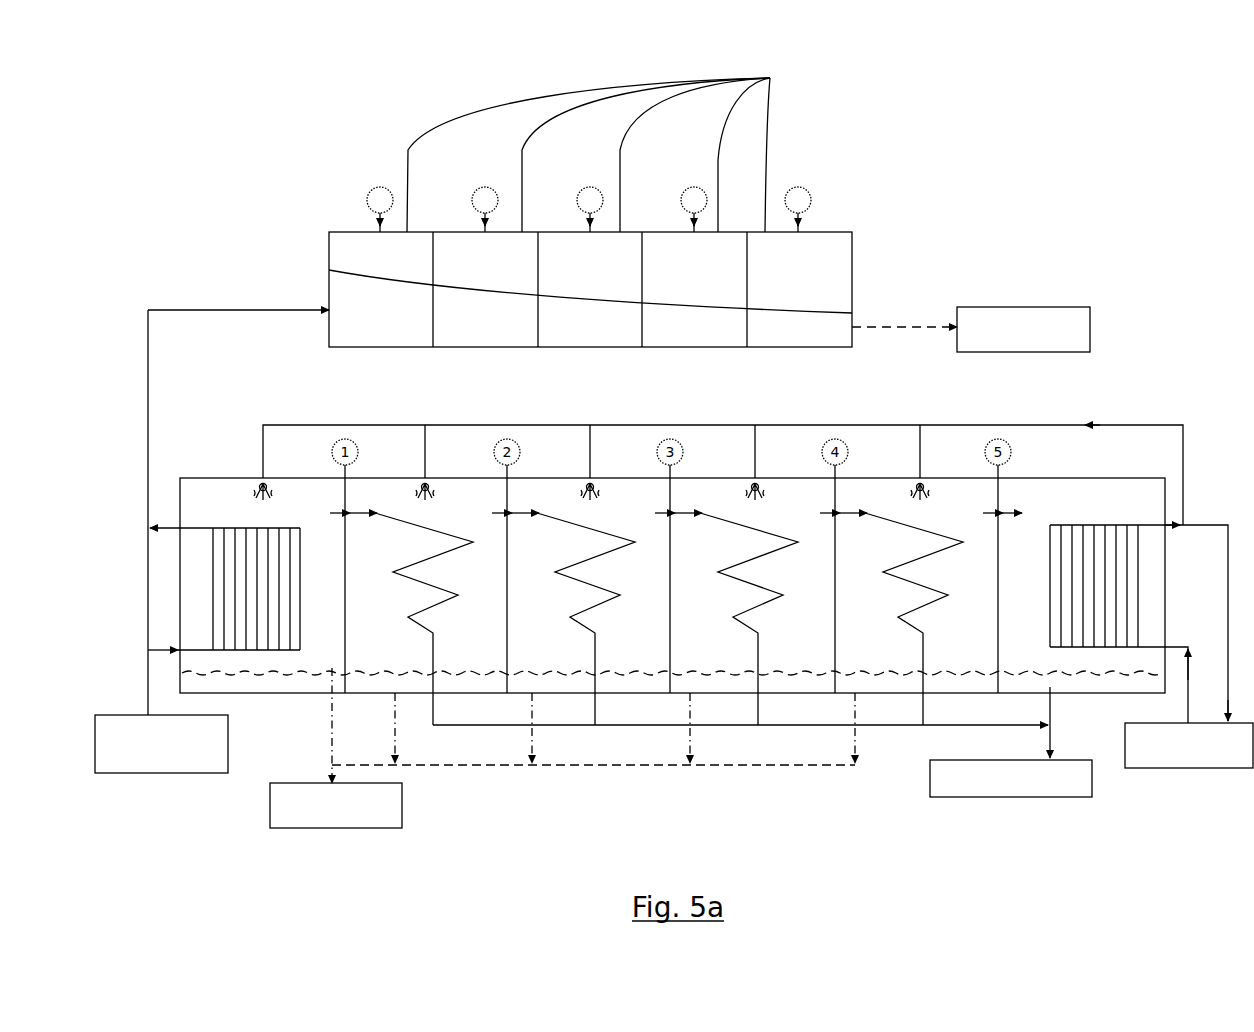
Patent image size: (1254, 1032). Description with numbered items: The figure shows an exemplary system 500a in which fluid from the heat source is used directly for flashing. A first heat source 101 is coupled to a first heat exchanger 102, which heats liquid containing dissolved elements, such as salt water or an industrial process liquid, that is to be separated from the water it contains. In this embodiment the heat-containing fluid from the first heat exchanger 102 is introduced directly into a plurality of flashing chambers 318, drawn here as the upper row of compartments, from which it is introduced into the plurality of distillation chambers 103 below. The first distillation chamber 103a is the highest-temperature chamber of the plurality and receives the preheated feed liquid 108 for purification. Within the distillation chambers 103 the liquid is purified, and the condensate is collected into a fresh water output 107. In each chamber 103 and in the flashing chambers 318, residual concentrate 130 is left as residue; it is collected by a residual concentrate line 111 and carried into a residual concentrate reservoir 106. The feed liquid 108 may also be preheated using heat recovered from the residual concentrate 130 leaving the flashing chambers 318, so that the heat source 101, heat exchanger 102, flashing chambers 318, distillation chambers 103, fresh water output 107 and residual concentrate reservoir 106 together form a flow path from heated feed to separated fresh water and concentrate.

The gas turbine inlet conditioning system 500a is at (664, 48).
The flashing chambers 318 is at (620, 149).
The residual concentrate 130 is at (333, 285).
The residual concentrate reservoir 106 is at (680, 567).
The first distillation chamber 103a is at (210, 505).
The distillation chambers 103 is at (378, 652).
The first heat exchanger 102 is at (197, 592).
The first heat source 101 is at (161, 744).
The fresh water output 107 is at (762, 742).
The feed liquid 108 is at (1151, 646).
The residual concentrate line 111 is at (437, 768).